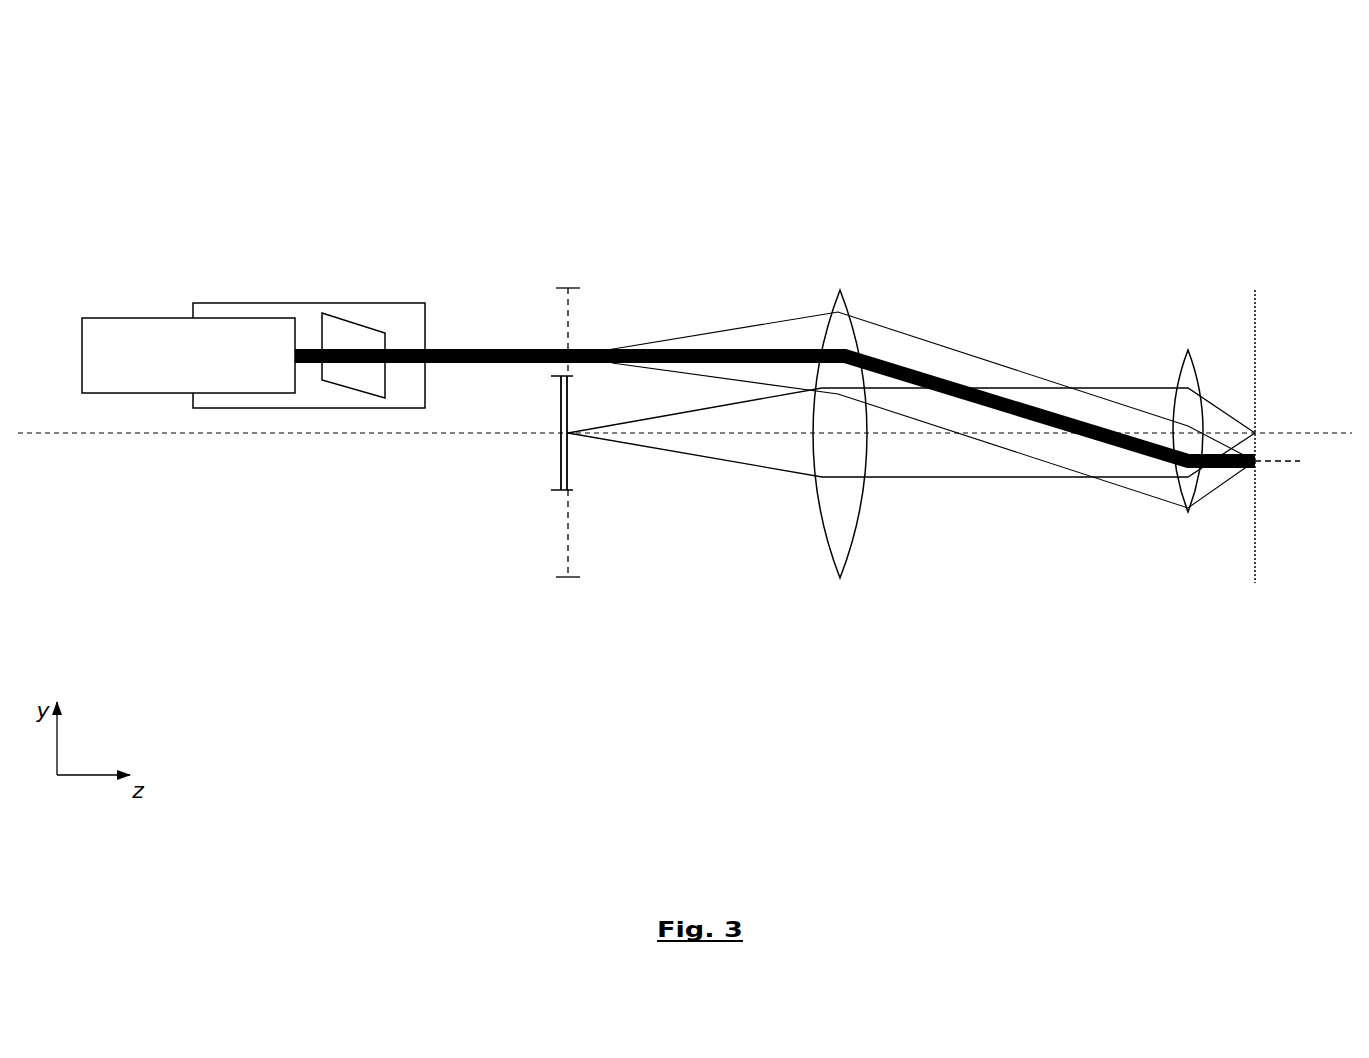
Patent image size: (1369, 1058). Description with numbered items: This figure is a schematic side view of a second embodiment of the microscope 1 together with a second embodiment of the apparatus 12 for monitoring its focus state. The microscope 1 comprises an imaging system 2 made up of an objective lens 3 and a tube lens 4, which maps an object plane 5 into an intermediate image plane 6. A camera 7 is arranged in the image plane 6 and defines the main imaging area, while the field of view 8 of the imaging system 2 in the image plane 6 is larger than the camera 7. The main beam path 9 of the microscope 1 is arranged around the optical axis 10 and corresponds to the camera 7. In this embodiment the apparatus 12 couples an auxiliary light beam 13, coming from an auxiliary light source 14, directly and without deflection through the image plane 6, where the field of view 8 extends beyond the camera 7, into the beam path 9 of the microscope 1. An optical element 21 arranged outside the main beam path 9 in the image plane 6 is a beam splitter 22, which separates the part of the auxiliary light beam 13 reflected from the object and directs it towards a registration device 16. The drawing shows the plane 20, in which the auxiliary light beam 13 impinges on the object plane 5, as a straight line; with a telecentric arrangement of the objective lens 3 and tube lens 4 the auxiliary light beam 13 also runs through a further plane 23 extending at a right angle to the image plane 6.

The microscope 1 is at (1056, 140).
The imaging system 2 is at (916, 256).
The objective lens 3 is at (1188, 350).
The tube lens 4 is at (838, 290).
The object plane 5 is at (1255, 586).
The image plane 6 is at (567, 592).
The camera 7 is at (559, 462).
The field of view 8 is at (563, 532).
The main beam path 9 is at (995, 480).
The optical axis 10 is at (155, 437).
The apparatus for monitoring the focus state 12 is at (120, 307).
The auxiliary light beam 13 is at (317, 357).
The auxiliary light source 14 is at (185, 345).
The registration device 16 is at (347, 303).
The plane 20 is at (1294, 466).
The optical element 21 is at (394, 278).
The beam splitter 22 is at (378, 332).
The further plane 23 is at (548, 356).